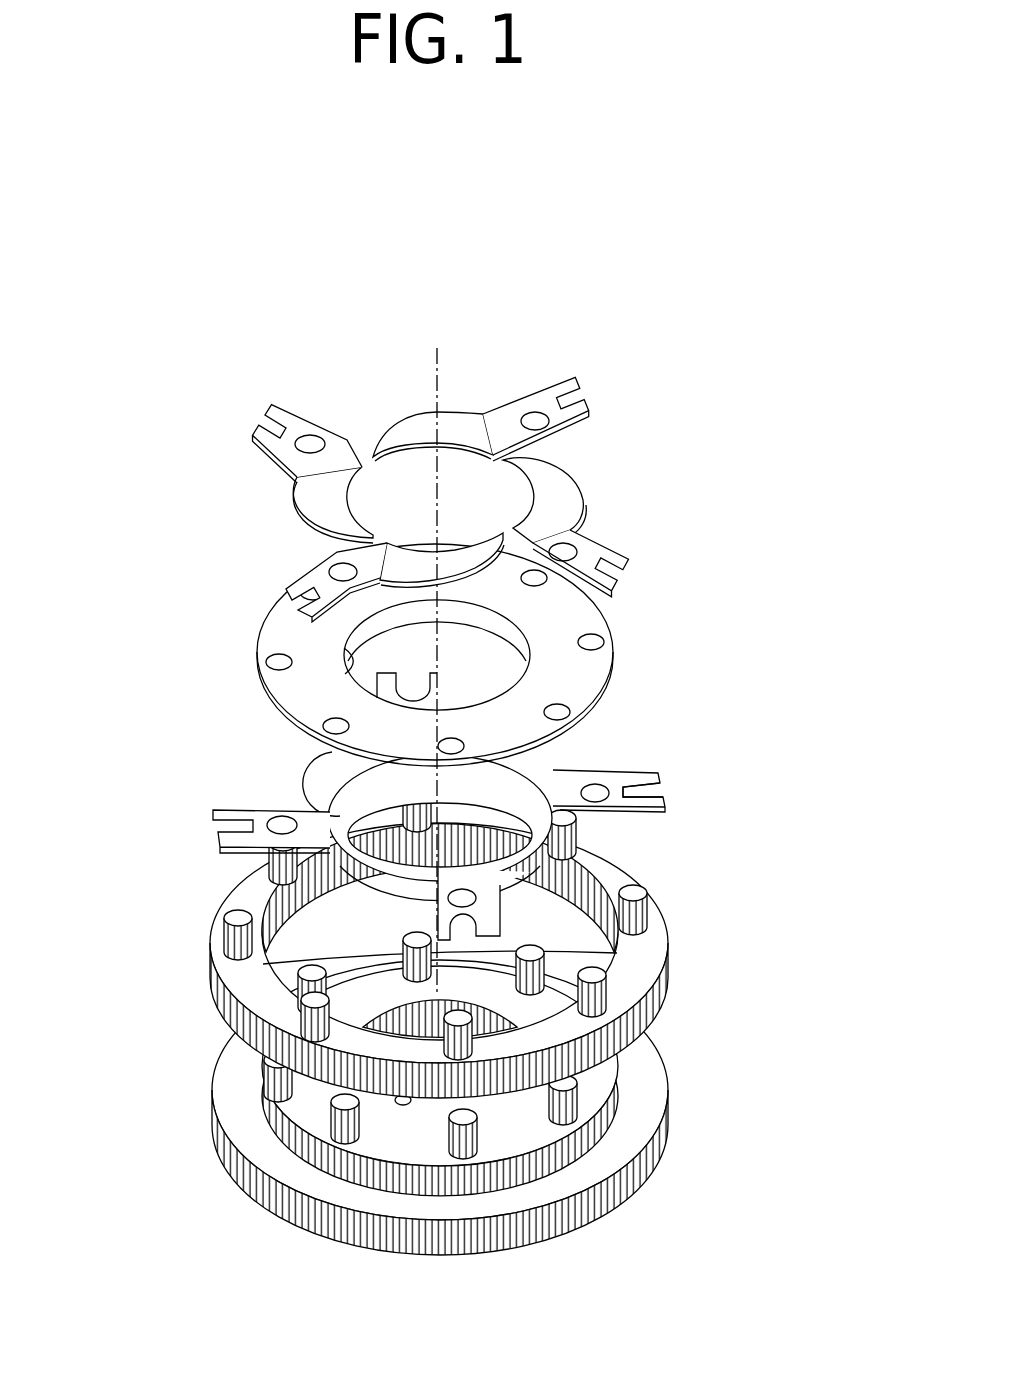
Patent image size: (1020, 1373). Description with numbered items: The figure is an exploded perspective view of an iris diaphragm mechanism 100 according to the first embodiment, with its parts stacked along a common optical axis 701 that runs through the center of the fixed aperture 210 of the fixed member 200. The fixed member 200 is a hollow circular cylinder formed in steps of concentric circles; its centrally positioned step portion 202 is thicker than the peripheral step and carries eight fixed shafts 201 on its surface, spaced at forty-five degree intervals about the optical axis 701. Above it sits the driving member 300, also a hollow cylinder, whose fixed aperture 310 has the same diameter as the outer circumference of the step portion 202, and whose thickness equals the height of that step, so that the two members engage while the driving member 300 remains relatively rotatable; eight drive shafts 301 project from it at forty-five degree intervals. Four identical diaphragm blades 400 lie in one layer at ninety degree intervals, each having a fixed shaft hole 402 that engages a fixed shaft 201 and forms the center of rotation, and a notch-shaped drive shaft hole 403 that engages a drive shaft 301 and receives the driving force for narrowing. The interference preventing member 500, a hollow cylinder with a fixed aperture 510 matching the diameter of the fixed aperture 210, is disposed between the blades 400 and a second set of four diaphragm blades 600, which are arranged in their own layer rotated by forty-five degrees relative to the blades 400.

The iris diaphragm mechanism 100 is at (226, 1204).
The fixed member 200 is at (512, 1134).
The fixed shafts 201 is at (612, 1080).
The step portion 202 is at (526, 1125).
The fixed aperture 210 is at (408, 1105).
The driving member 300 is at (455, 940).
The drive shafts 301 is at (650, 892).
The fixed aperture 310 is at (270, 907).
The diaphragm blades 400 is at (522, 822).
The fixed shaft hole 402 is at (600, 785).
The drive shaft hole 403 is at (672, 803).
The interference preventing member 500 is at (454, 655).
The fixed aperture 510 is at (346, 652).
The diaphragm blades 600 is at (598, 400).
The optical axis 701 is at (437, 356).